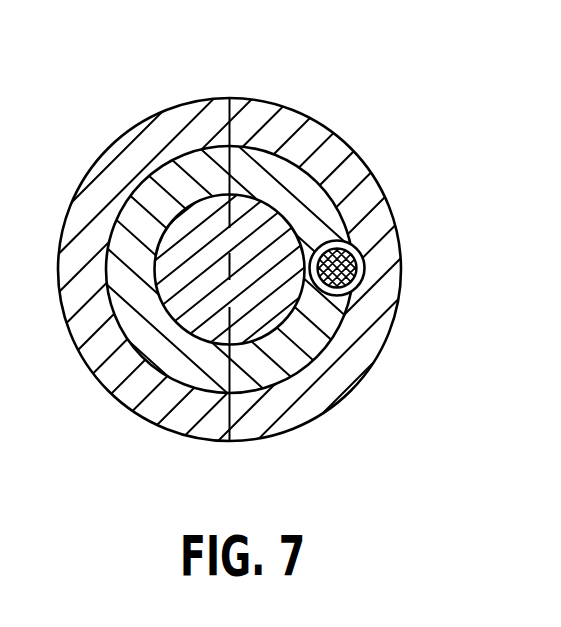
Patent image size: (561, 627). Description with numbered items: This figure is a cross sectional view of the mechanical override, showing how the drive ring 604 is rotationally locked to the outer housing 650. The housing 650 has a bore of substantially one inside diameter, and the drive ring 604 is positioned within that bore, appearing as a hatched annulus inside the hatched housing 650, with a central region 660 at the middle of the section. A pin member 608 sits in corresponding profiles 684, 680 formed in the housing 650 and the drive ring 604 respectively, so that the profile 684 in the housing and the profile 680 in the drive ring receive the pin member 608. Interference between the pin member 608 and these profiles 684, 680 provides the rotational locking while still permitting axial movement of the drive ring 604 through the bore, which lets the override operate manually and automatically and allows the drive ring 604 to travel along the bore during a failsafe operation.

The outer housing 650 is at (357, 178).
The drive ring 604 is at (148, 342).
The central core 660 is at (252, 230).
The profile in the housing 684 is at (357, 252).
The pin member 608 is at (357, 270).
The profile in the drive ring 680 is at (338, 296).